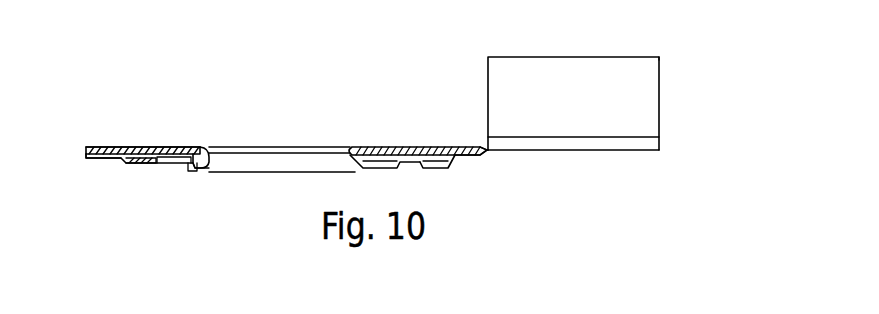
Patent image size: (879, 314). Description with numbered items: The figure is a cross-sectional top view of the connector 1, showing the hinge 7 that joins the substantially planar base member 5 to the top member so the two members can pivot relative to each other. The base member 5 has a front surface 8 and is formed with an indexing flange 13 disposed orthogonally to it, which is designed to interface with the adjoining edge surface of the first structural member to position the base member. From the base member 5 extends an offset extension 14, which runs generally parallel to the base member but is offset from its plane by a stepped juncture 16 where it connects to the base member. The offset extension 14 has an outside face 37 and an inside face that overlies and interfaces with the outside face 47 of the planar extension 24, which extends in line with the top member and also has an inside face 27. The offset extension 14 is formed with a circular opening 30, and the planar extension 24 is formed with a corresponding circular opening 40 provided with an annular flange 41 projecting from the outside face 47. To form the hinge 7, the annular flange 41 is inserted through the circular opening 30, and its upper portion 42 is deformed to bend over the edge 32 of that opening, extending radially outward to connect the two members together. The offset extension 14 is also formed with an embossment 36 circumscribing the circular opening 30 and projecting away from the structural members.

The connector 1 is at (727, 10).
The base member 5 is at (661, 150).
The hinge 7 is at (189, 188).
The front surface 8 is at (628, 152).
The indexing flange 13 is at (657, 90).
The offset extension 14 is at (453, 162).
The stepped juncture 16 is at (475, 154).
The planar extension 24 is at (100, 146).
The inside face 27 is at (171, 146).
The circular opening 30 is at (203, 172).
The edge 32 is at (333, 156).
The embossment 36 is at (420, 163).
The outside face 37 is at (94, 160).
The corresponding circular opening 40 is at (202, 147).
The annular flange 41 is at (208, 168).
The upper portion 42 is at (370, 167).
The outside face 47 is at (139, 160).